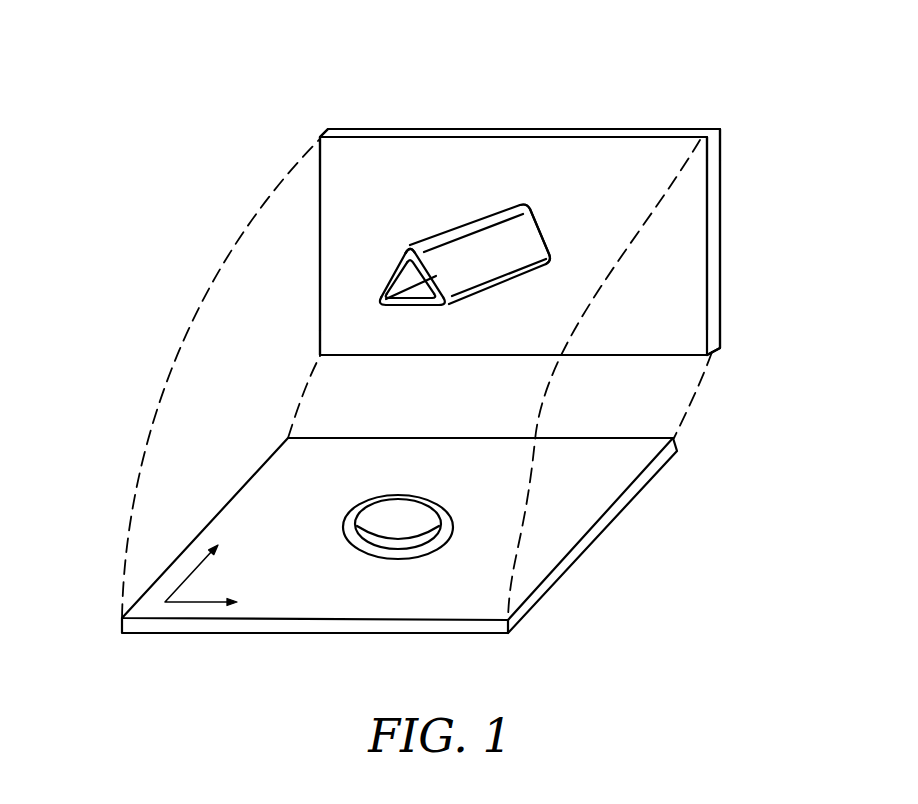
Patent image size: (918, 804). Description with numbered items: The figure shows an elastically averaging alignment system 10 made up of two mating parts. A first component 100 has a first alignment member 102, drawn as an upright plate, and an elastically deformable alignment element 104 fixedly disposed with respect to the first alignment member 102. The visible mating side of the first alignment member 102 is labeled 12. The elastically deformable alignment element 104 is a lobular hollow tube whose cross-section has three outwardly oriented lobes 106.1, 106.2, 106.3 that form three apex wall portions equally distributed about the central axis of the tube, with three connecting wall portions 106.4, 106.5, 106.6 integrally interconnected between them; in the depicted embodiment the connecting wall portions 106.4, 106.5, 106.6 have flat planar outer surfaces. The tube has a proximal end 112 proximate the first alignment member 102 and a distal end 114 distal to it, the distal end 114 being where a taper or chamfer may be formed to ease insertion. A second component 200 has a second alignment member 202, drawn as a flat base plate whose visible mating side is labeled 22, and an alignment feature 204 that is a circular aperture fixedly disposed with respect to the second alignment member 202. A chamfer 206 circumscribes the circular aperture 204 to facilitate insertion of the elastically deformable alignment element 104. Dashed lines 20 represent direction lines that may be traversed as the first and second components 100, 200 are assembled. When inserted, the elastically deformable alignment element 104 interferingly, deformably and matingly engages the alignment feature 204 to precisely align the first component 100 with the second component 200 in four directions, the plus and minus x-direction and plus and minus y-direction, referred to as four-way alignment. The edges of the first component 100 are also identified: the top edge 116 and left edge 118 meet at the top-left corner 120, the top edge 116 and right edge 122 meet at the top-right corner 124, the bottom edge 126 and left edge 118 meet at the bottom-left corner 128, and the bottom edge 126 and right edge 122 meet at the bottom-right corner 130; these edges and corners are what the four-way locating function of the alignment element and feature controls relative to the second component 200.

The elastically averaging alignment system 10 is at (188, 83).
The mating side of the first alignment member 12 is at (628, 175).
The dashed direction lines 20 is at (176, 358).
The mating side of the second alignment member 22 is at (303, 477).
The first component 100 is at (607, 128).
The first alignment member 102 is at (677, 128).
The elastically deformable alignment element 104 is at (449, 221).
The outwardly oriented lobe 106.1 is at (378, 306).
The outwardly oriented lobe 106.2 is at (410, 243).
The outwardly oriented lobe 106.3 is at (455, 312).
The connecting wall portion 106.4 is at (392, 272).
The connecting wall portion 106.5 is at (444, 274).
The connecting wall portion 106.6 is at (410, 312).
The proximal end 112 is at (517, 200).
The distal end 114 is at (401, 241).
The top edge 116 is at (437, 132).
The left edge 118 is at (320, 228).
The top-left corner 120 is at (323, 132).
The right edge 122 is at (722, 237).
The top-right corner 124 is at (722, 128).
The bottom edge 126 is at (650, 358).
The bottom-left corner 128 is at (317, 358).
The bottom-right corner 130 is at (713, 352).
The second component 200 is at (596, 545).
The second alignment member 202 is at (551, 588).
The alignment feature 204 is at (398, 544).
The chamfer 206 is at (420, 497).